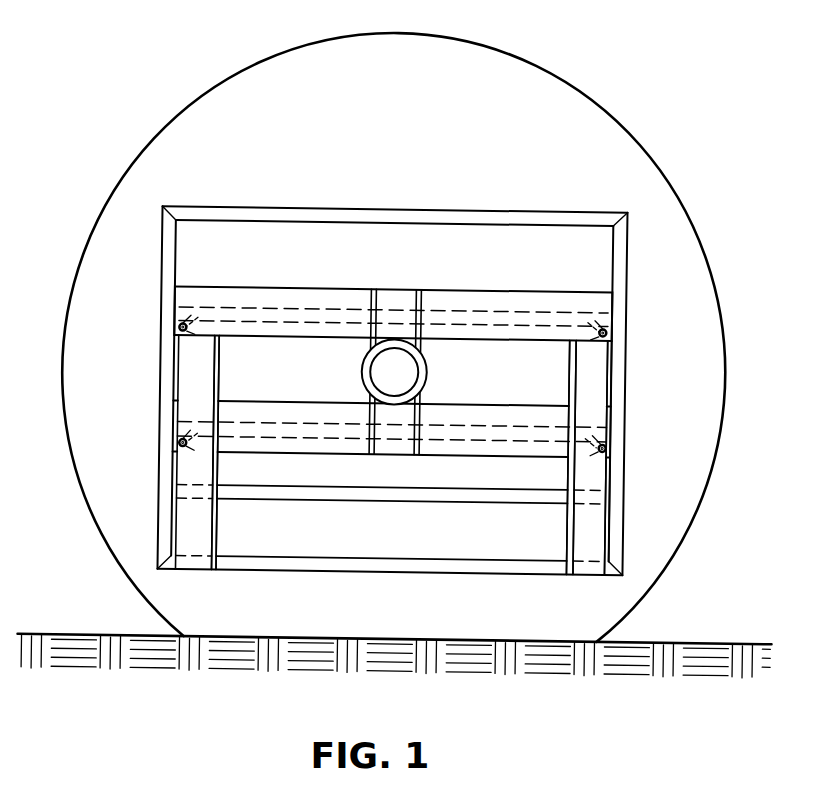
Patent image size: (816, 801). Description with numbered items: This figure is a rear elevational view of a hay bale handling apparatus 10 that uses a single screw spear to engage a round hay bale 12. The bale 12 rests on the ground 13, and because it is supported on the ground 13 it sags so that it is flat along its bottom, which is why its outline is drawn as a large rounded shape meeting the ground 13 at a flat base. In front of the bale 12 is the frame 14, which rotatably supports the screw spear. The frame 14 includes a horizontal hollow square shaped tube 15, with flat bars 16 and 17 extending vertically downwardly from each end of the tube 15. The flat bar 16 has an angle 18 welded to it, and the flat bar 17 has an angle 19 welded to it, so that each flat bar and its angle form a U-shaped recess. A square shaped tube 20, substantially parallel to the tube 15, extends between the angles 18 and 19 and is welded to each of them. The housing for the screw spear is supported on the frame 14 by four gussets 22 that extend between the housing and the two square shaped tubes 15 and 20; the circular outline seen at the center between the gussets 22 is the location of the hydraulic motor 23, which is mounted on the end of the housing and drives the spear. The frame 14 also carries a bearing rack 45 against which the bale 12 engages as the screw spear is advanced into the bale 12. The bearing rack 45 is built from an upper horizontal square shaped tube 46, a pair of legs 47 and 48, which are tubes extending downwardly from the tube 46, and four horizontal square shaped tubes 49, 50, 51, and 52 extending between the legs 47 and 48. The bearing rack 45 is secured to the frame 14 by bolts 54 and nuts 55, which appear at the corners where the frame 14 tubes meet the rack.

The hay bale handling apparatus 10 is at (142, 435).
The round hay bale 12 is at (598, 101).
The ground 13 is at (675, 638).
The frame 14 is at (592, 458).
The horizontal hollow square shaped tube 15 is at (393, 296).
The flat bar 16 is at (185, 452).
The flat bar 17 is at (614, 357).
The angle 18 is at (220, 470).
The angle 19 is at (568, 360).
The square shaped tube 20 is at (391, 442).
The gussets 22 is at (411, 296).
The hydraulic motor 23 is at (428, 379).
The bearing rack 45 is at (390, 363).
The upper horizontal square shaped tube 46 is at (294, 208).
The leg 47 is at (159, 248).
The leg 48 is at (626, 255).
The horizontal square shaped tube 49 is at (313, 308).
The horizontal square shaped tube 50 is at (309, 439).
The horizontal square shaped tube 51 is at (377, 502).
The horizontal square shaped tube 52 is at (369, 574).
The bolts 54 is at (185, 326).
The nuts 55 is at (178, 330).